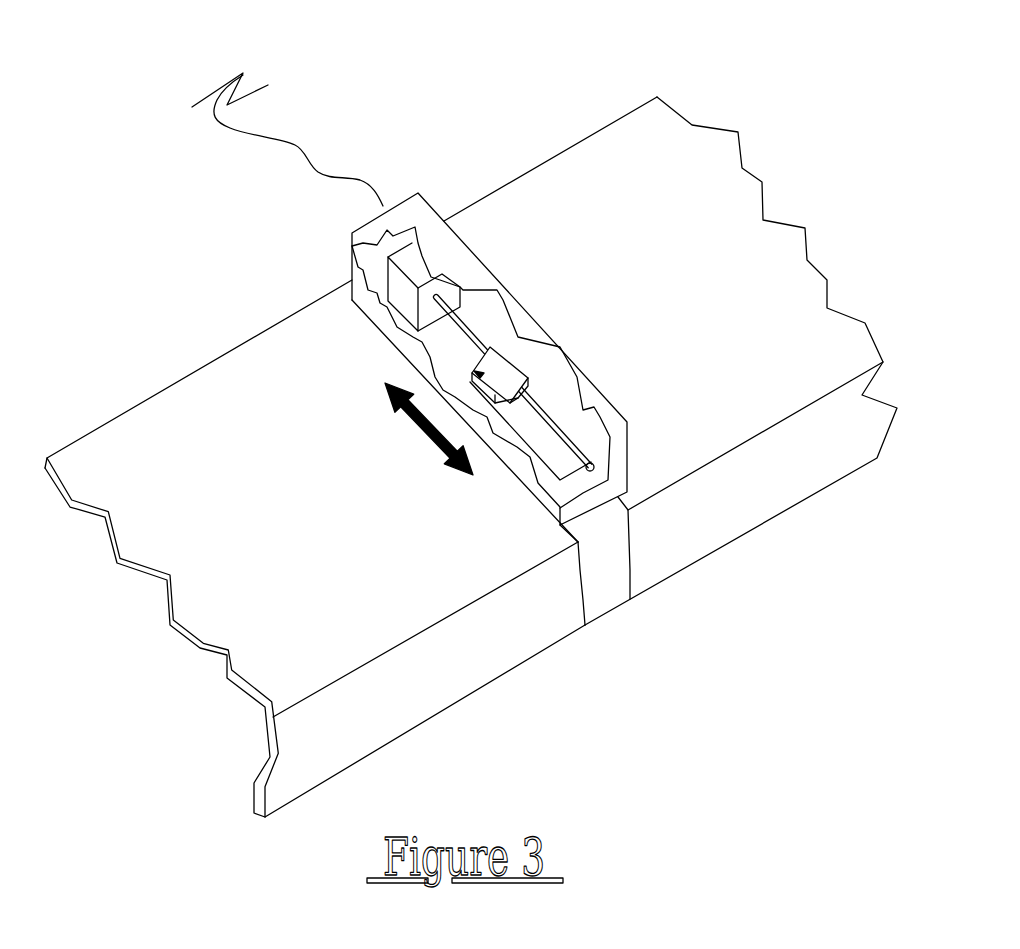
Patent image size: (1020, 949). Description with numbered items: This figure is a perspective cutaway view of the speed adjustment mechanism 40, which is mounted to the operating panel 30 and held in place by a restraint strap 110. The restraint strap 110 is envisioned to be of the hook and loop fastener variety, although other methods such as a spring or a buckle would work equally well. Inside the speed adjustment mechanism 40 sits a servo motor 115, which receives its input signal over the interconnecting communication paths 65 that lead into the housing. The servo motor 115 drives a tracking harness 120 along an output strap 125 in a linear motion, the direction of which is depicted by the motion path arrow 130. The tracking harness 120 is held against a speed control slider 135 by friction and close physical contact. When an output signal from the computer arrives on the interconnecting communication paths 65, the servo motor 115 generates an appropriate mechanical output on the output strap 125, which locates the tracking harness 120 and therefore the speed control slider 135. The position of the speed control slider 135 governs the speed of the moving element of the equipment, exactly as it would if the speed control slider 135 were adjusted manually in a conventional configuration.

The operating panel 30 is at (700, 208).
The speed adjustment mechanism 40 is at (440, 245).
The interconnecting communication paths 65 is at (302, 148).
The restraint strap 110 is at (605, 572).
The servo motor 115 is at (403, 288).
The tracking harness 120 is at (506, 370).
The output strap 125 is at (467, 325).
The motion path arrow 130 is at (400, 418).
The speed control slider 135 is at (476, 374).